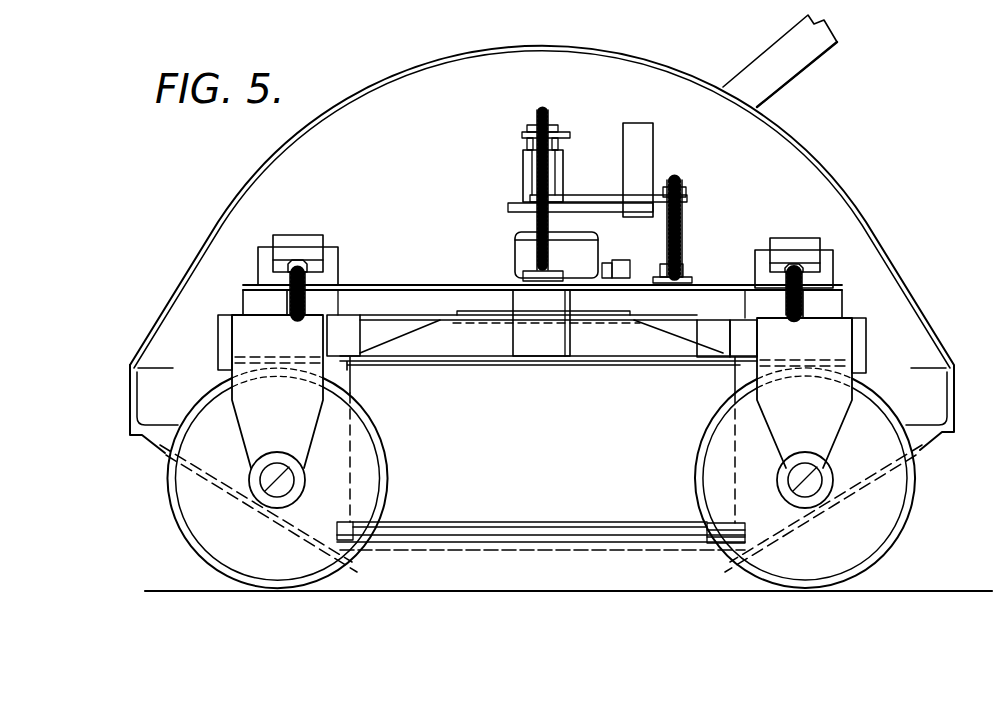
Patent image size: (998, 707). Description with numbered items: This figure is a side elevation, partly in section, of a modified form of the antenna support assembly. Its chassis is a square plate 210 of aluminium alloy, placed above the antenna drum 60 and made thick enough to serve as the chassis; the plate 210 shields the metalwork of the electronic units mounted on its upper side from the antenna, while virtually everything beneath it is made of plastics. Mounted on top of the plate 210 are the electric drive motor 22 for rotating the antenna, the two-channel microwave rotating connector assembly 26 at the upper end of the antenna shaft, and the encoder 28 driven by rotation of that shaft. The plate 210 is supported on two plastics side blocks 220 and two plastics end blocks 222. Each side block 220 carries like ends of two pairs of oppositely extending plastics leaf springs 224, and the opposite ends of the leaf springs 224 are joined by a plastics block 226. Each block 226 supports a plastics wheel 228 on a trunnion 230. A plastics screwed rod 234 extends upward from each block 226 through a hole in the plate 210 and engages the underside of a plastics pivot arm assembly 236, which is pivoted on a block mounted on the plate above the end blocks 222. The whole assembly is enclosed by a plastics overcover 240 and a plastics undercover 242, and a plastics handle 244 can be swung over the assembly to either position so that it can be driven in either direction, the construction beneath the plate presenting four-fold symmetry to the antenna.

The electric drive motor 22 is at (645, 145).
The two-channel microwave rotating connector assembly 26 is at (525, 132).
The encoder 28 is at (520, 238).
The antenna drum 60 is at (556, 474).
The square plate 210 is at (418, 286).
The side blocks 220 is at (549, 343).
The end blocks 222 is at (245, 298).
The leaf springs 224 is at (380, 357).
The block 226 is at (345, 330).
The wheel 228 is at (364, 462).
The trunnion 230 is at (303, 411).
The screwed rod 234 is at (285, 270).
The pivot arm assembly 236 is at (302, 214).
The overcover 240 is at (238, 189).
The undercover 242 is at (491, 552).
The handle 244 is at (787, 44).